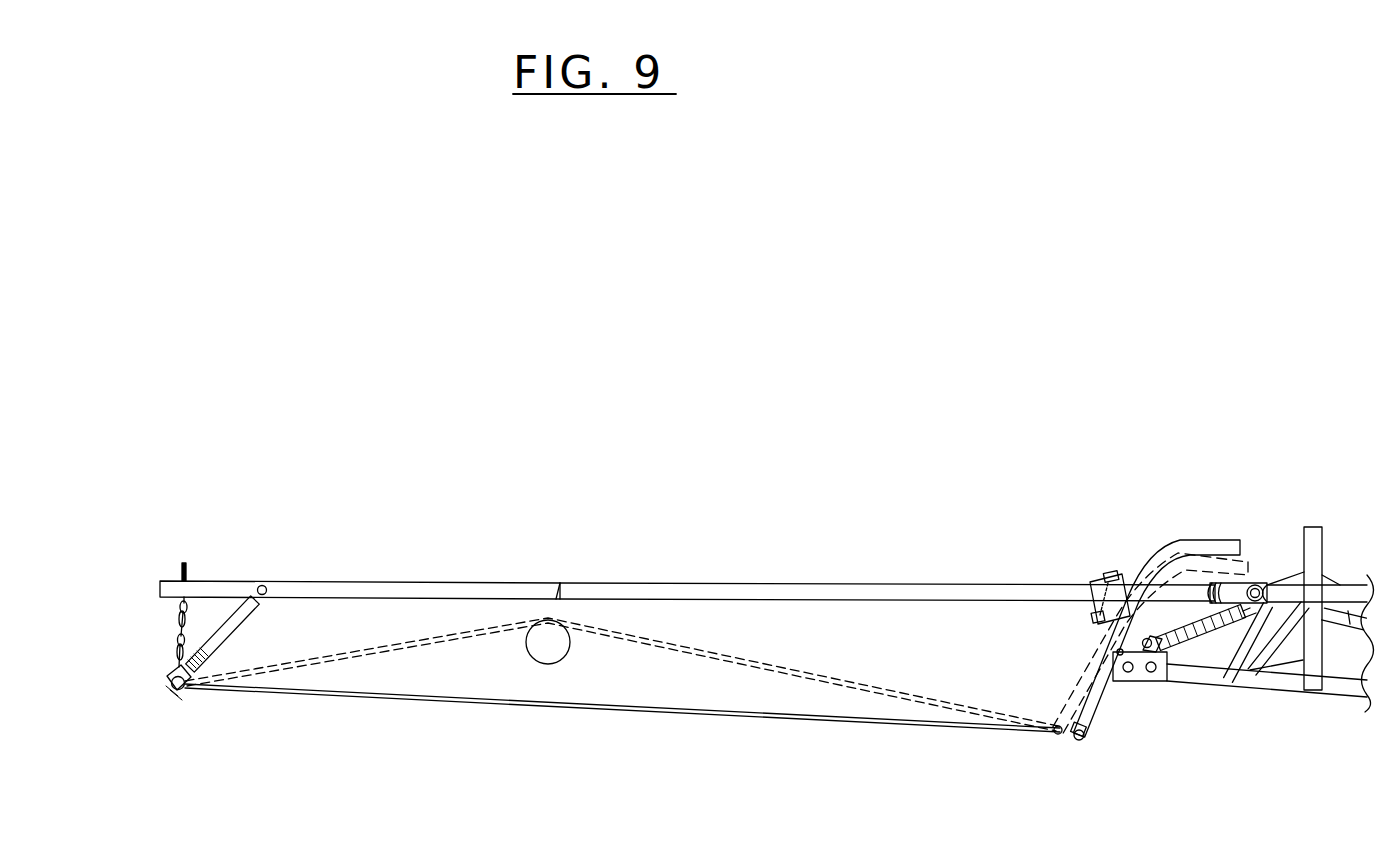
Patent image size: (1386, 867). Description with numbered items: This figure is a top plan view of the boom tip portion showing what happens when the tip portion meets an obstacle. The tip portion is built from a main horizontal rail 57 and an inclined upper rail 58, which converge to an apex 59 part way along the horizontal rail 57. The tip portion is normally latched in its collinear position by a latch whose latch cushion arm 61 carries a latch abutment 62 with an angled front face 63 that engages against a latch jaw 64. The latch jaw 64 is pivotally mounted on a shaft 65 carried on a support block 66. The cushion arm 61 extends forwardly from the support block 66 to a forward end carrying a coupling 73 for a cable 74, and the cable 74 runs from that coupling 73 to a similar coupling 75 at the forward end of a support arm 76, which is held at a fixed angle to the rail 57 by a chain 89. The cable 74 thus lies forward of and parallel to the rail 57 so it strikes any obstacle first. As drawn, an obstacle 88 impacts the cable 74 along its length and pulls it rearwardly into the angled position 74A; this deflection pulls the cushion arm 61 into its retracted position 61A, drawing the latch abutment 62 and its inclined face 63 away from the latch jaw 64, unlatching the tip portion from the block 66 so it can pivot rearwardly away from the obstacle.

The main horizontal rail 57 is at (360, 559).
The inclined upper rail 58 is at (887, 560).
The apex 59 is at (596, 559).
The latch cushion arm 61 is at (1135, 706).
The retracted position of cushion arm 61A is at (1103, 643).
The latch abutment 62 is at (1160, 715).
The angled front face 63 is at (1074, 612).
The latch jaw 64 is at (1161, 572).
The shaft 65 is at (1190, 680).
The support block 66 is at (1175, 689).
The coupling 73 is at (1046, 766).
The cable 74 is at (622, 729).
The angled position of cable 74A is at (621, 674).
The coupling 75 is at (217, 714).
The support arm 76 is at (203, 596).
The obstacle 88 is at (595, 661).
The chain 89 is at (129, 615).